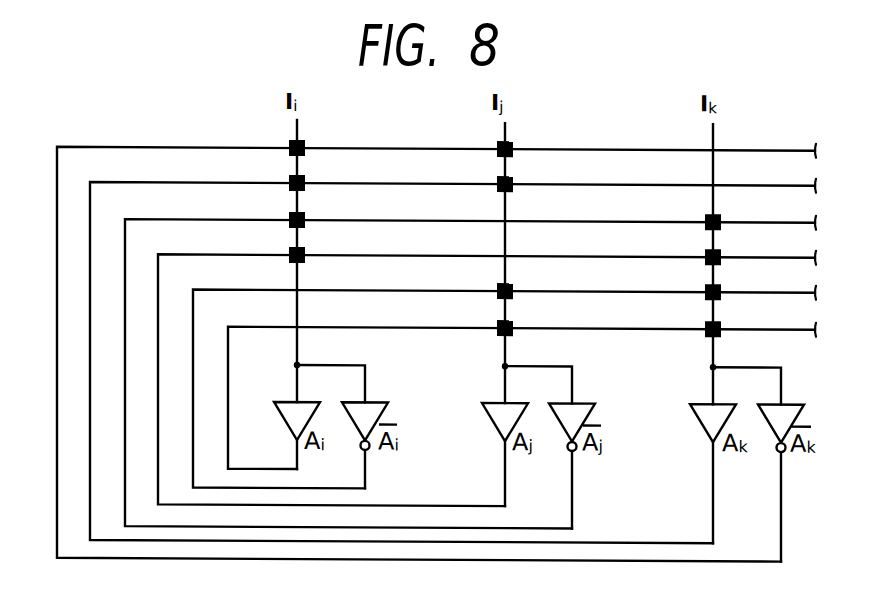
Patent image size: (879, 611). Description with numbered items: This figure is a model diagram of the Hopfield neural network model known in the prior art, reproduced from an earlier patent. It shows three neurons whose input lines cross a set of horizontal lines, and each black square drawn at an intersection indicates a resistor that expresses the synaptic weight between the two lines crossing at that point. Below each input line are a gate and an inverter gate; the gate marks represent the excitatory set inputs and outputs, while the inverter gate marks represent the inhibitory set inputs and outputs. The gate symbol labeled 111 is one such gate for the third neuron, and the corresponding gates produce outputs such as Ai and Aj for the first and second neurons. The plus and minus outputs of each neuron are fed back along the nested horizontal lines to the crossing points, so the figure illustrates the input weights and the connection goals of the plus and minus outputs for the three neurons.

The inverter for address signal Ak 111 is at (697, 417).
The buffer output Ai is at (297, 435).
The buffer output Aj is at (505, 454).